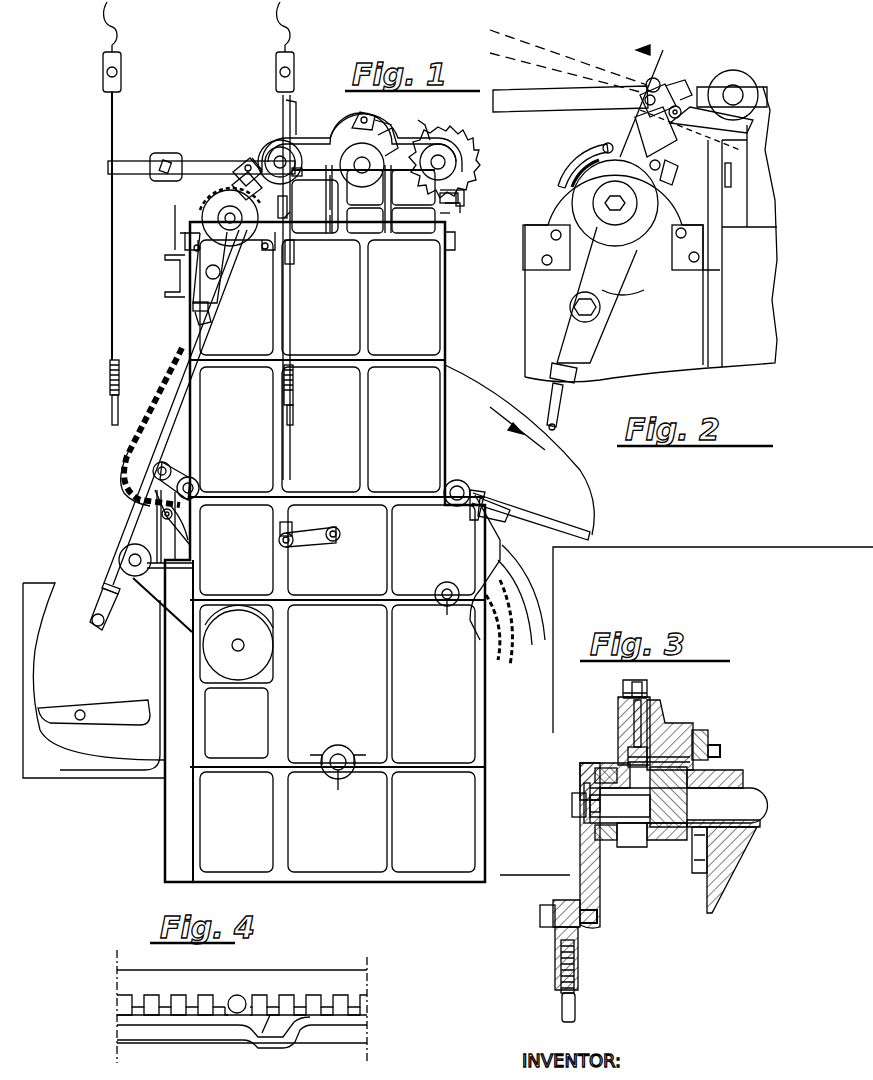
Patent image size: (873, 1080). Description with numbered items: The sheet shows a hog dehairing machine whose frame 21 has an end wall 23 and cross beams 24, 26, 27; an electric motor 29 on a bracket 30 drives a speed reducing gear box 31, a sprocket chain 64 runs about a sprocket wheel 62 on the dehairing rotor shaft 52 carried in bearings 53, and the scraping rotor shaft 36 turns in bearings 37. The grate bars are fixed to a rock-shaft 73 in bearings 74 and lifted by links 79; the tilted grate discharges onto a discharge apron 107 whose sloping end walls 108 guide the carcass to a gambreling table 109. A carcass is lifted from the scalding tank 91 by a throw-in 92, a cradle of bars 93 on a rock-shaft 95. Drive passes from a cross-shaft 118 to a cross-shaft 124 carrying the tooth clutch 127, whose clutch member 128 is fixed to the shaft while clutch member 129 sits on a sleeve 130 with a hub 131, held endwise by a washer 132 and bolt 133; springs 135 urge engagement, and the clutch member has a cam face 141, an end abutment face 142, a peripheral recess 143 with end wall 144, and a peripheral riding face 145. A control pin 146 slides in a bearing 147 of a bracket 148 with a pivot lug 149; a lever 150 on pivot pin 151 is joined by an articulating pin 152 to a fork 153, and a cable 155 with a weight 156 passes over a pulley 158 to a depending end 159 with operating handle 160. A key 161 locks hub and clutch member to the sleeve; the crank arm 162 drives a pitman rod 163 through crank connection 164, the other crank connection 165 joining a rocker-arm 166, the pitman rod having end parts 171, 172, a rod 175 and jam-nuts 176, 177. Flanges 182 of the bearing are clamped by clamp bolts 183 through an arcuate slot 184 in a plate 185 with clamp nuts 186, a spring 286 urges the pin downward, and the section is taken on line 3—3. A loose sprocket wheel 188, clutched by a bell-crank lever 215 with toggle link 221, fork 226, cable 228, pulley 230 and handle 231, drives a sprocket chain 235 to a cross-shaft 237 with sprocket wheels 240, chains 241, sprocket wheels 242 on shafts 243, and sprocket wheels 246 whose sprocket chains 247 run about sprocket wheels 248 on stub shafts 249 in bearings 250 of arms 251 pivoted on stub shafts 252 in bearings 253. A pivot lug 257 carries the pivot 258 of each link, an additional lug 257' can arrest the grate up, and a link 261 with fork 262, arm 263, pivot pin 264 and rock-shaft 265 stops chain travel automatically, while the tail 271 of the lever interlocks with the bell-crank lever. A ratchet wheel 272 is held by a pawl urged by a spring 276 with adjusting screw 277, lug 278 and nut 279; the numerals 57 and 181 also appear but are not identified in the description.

In FIG. 1, the frame 21 is at (452, 285).
In FIG. 1, the end wall 23 is at (425, 338).
In FIG. 1, the cross beam 24 is at (170, 276).
In FIG. 1, the cross beam 26 is at (456, 247).
In FIG. 1, the cross beam 27 is at (505, 510).
In FIG. 1, the electric motor 29 is at (265, 640).
In FIG. 1, the bracket 30 is at (276, 693).
In FIG. 1, the speed reducing gear box 31 is at (238, 612).
In FIG. 1, the shaft 36 is at (338, 756).
In FIG. 1, the bearings 37 is at (338, 780).
In FIG. 1, the shaft 52 is at (447, 588).
In FIG. 1, the bearings 53 is at (447, 606).
In FIG. 1, the spring 57 is at (500, 640).
In FIG. 1, the sprocket wheel 62 is at (475, 560).
In FIG. 1, the sprocket chain 64 is at (495, 610).
In FIG. 1, the rock-shaft 73 is at (459, 482).
In FIG. 1, the bearings 74 is at (478, 492).
In FIG. 1, the lifting links 79 is at (170, 548).
In FIG. 1, the scalding tank 91 is at (72, 775).
In FIG. 1, the throw-in 92 is at (76, 695).
In FIG. 1, the bars 93 is at (105, 715).
In FIG. 1, the rock-shaft 95 is at (130, 556).
In FIG. 1, the discharge apron 107 is at (545, 520).
In FIG. 1, the end walls 108 is at (582, 510).
In FIG. 1, the gambreling table 109 is at (640, 548).
In FIG. 1, the cross-shaft 118 is at (293, 176).
In FIG. 3, the cross-shaft 124 is at (752, 808).
In FIG. 1, the tooth clutch 127 is at (180, 235).
In FIG. 3, the tooth clutch 127 is at (612, 735).
In FIG. 4, the tooth clutch 127 is at (371, 1005).
In FIG. 3, the clutch member 128 is at (672, 835).
In FIG. 4, the clutch member 128 is at (332, 971).
In FIG. 3, the clutch member 129 is at (636, 840).
In FIG. 4, the clutch member 129 is at (335, 1045).
In FIG. 3, the sleeve 130 is at (668, 797).
In FIG. 1, the hub 131 is at (214, 212).
In FIG. 2, the hub 131 is at (655, 232).
In FIG. 3, the hub 131 is at (582, 770).
In FIG. 3, the washer 132 is at (584, 815).
In FIG. 2, the bolt 133 is at (614, 208).
In FIG. 3, the bolt 133 is at (572, 803).
In FIG. 3, the springs 135 is at (607, 840).
In FIG. 4, the cam face 141 is at (250, 1030).
In FIG. 3, the end abutment face 142 is at (665, 850).
In FIG. 4, the end abutment face 142 is at (206, 1016).
In FIG. 4, the peripheral recess 143 is at (263, 1018).
In FIG. 4, the end wall 144 is at (282, 1040).
In FIG. 3, the peripheral riding face 145 is at (620, 760).
In FIG. 4, the peripheral riding face 145 is at (350, 1028).
In FIG. 3, the control pin 146 is at (630, 755).
In FIG. 4, the control pin 146 is at (238, 995).
In FIG. 2, the bearing 147 is at (645, 135).
In FIG. 3, the bearing 147 is at (650, 725).
In FIG. 3, the bracket 148 is at (675, 730).
In FIG. 2, the pivot lug 149 is at (732, 87).
In FIG. 1, the lever 150 is at (205, 162).
In FIG. 2, the lever 150 is at (543, 92).
In FIG. 1, the pivot pin 151 is at (256, 158).
In FIG. 2, the pivot pin 151 is at (687, 82).
In FIG. 1, the articulating pin 152 is at (246, 166).
In FIG. 2, the articulating pin 152 is at (645, 100).
In FIG. 3, the articulating pin 152 is at (648, 695).
In FIG. 2, the fork 153 is at (676, 106).
In FIG. 3, the fork 153 is at (643, 688).
In FIG. 1, the flexible connection 155 is at (115, 110).
In FIG. 1, the weight 156 is at (162, 158).
In FIG. 1, the pulley 158 is at (122, 72).
In FIG. 1, the depending end 159 is at (114, 252).
In FIG. 1, the operating handle 160 is at (112, 412).
In FIG. 3, the key 161 is at (620, 806).
In FIG. 1, the crank arm 162 is at (222, 258).
In FIG. 2, the crank arm 162 is at (655, 272).
In FIG. 3, the crank arm 162 is at (596, 878).
In FIG. 2, the pitman rod 163 is at (570, 394).
In FIG. 3, the pitman rod 163 is at (560, 930).
In FIG. 1, the crank connection 164 is at (216, 278).
In FIG. 2, the crank connection 164 is at (592, 308).
In FIG. 3, the crank connection 164 is at (578, 918).
In FIG. 1, the crank connection 165 is at (100, 628).
In FIG. 1, the rocker-arm 166 is at (142, 576).
In FIG. 1, the end part 171 is at (218, 312).
In FIG. 2, the end part 171 is at (572, 357).
In FIG. 1, the end part 172 is at (102, 604).
In FIG. 1, the rod 175 is at (178, 403).
In FIG. 2, the rod 175 is at (562, 415).
In FIG. 3, the rod 175 is at (575, 1005).
In FIG. 1, the jam-nut 176 is at (196, 308).
In FIG. 2, the jam-nut 176 is at (572, 374).
In FIG. 3, the jam-nut 176 is at (560, 982).
In FIG. 1, the jam-nut 177 is at (108, 585).
In FIG. 3, the plate 181 is at (700, 732).
In FIG. 1, the flanges 182 is at (230, 190).
In FIG. 2, the flanges 182 is at (676, 178).
In FIG. 3, the flanges 182 is at (723, 798).
In FIG. 2, the clamp bolts 183 is at (597, 152).
In FIG. 3, the clamp bolts 183 is at (720, 747).
In FIG. 2, the arcuate slot 184 is at (572, 175).
In FIG. 3, the arcuate slot 184 is at (712, 745).
In FIG. 1, the plate 185 is at (200, 223).
In FIG. 2, the plate 185 is at (686, 262).
In FIG. 3, the plate 185 is at (716, 742).
In FIG. 3, the clamp nuts 186 is at (722, 753).
In FIG. 1, the sprocket wheel 188 is at (272, 145).
In FIG. 1, the bell-crank lever 215 is at (288, 208).
In FIG. 2, the bell-crank lever 215 is at (733, 175).
In FIG. 1, the toggle link 221 is at (290, 222).
In FIG. 1, the fork 226 is at (296, 262).
In FIG. 1, the flexible connection 228 is at (300, 140).
In FIG. 1, the pulley 230 is at (294, 62).
In FIG. 1, the handle 231 is at (296, 412).
In FIG. 1, the sprocket chain 235 is at (326, 140).
In FIG. 1, the cross-shaft 237 is at (456, 160).
In FIG. 1, the sprocket wheels 240 is at (470, 148).
In FIG. 1, the sprocket chains 241 is at (392, 140).
In FIG. 1, the sprocket wheels 242 is at (358, 180).
In FIG. 1, the shafts 243 is at (352, 220).
In FIG. 1, the sprocket wheels 246 is at (364, 118).
In FIG. 1, the sprocket chains 247 is at (162, 400).
In FIG. 1, the sprocket wheels 248 is at (122, 462).
In FIG. 1, the stub shafts 249 is at (168, 466).
In FIG. 1, the bearings 250 is at (167, 472).
In FIG. 1, the arms 251 is at (180, 480).
In FIG. 1, the stub shafts 252 is at (199, 488).
In FIG. 1, the bearings 253 is at (176, 512).
In FIG. 1, the pivot lug 257 is at (199, 523).
In FIG. 1, the additional lug 257' is at (400, 109).
In FIG. 1, the pivot 258 is at (162, 514).
In FIG. 1, the link 261 is at (244, 474).
In FIG. 1, the fork 262 is at (282, 526).
In FIG. 1, the arm 263 is at (322, 540).
In FIG. 1, the pivot pin 264 is at (290, 545).
In FIG. 1, the rock-shaft 265 is at (338, 530).
In FIG. 2, the tail 271 is at (714, 140).
In FIG. 1, the ratchet wheel 272 is at (428, 135).
In FIG. 1, the spring 276 is at (440, 200).
In FIG. 1, the adjusting screw 277 is at (462, 198).
In FIG. 1, the lug 278 is at (440, 214).
In FIG. 1, the nut 279 is at (458, 210).
In FIG. 3, the spring 286 is at (630, 735).
In FIG. 2, the section line 3 is at (576, 247).